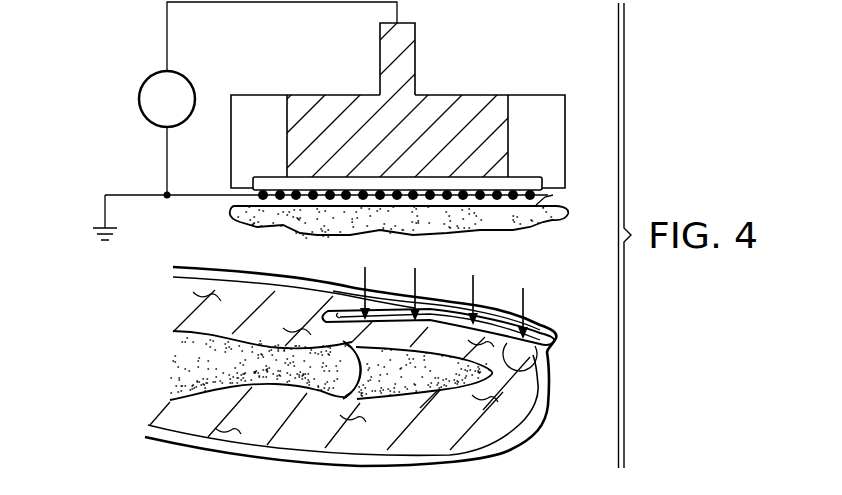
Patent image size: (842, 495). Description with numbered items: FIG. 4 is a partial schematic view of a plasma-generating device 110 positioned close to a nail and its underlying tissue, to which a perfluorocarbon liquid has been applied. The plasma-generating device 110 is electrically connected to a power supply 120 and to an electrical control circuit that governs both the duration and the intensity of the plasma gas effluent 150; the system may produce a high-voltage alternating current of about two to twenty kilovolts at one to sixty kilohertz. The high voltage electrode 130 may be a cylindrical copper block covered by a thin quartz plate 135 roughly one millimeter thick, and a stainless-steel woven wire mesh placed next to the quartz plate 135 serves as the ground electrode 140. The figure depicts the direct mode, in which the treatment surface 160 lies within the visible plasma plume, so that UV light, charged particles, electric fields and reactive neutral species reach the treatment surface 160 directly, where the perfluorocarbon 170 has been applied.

The plasma-generating device 110 is at (257, 105).
The power supply 120 is at (139, 99).
The high voltage electrode 130 is at (472, 105).
The quartz plate 135 is at (268, 177).
The ground electrode 140 is at (560, 214).
The plasma gas effluent 150 is at (230, 210).
The treatment surface 160 is at (528, 372).
The perfluorocarbon 170 is at (490, 298).